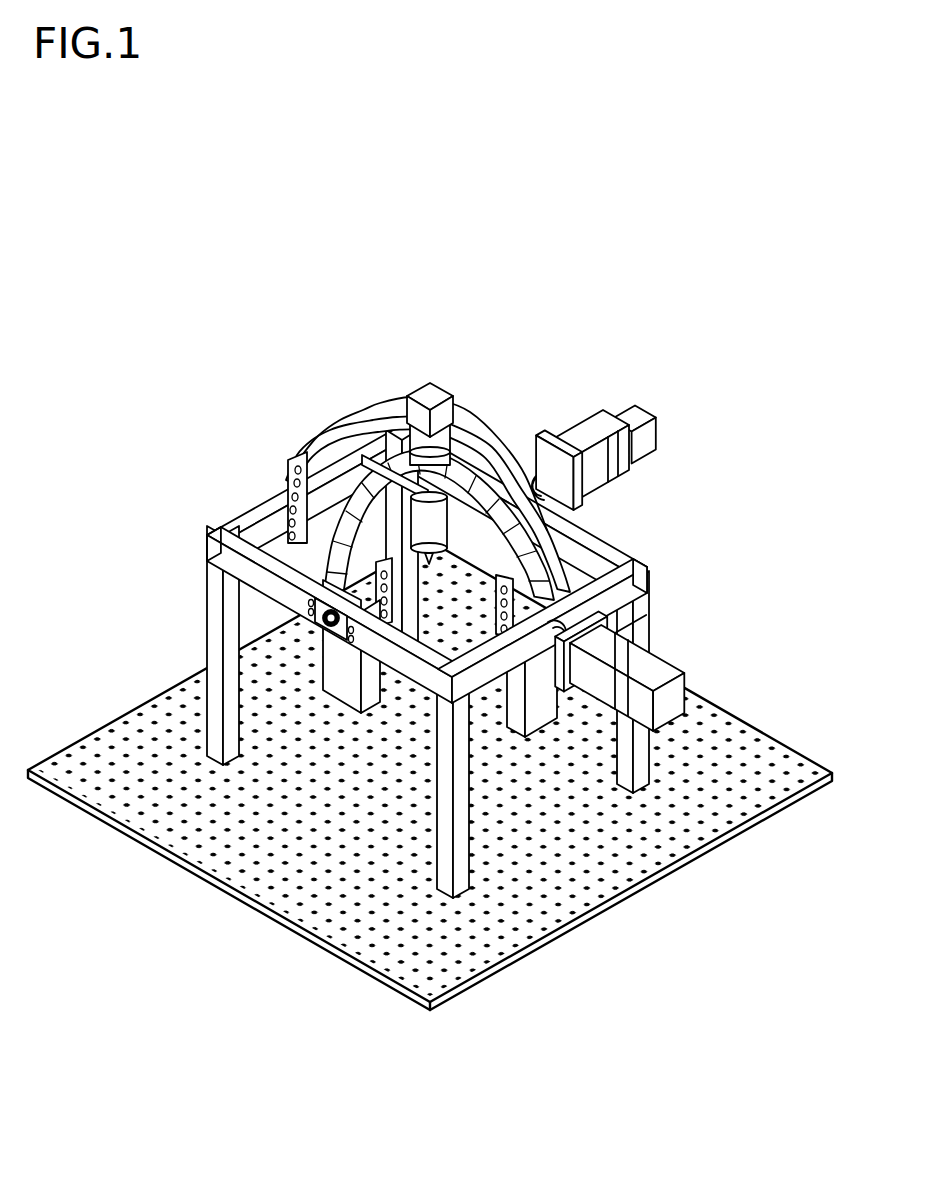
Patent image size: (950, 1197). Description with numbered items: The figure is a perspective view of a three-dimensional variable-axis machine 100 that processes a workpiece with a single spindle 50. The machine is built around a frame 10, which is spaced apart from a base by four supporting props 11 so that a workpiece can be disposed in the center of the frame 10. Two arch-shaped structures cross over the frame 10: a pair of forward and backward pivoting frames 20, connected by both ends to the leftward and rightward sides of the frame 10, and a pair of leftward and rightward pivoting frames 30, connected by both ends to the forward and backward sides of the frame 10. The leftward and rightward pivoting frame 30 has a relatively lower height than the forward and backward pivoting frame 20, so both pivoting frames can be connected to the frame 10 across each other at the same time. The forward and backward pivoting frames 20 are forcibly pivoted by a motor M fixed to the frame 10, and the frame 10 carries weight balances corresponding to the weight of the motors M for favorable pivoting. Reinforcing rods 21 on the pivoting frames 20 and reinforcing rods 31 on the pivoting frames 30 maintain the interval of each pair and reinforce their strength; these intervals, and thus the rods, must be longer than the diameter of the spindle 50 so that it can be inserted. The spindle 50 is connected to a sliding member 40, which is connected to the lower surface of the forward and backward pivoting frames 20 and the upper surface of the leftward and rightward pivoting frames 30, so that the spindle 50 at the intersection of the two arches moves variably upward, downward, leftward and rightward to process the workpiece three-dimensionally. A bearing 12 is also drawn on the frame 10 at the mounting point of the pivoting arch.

The 3D variable-axis machine 100 is at (584, 296).
The frame 10 is at (617, 552).
The supporting props 11 is at (643, 616).
The bearing 12 is at (316, 608).
The forward and backward pivoting frame 20 is at (480, 441).
The reinforcing rods 21 is at (537, 562).
The leftward and rightward pivoting frame 30 is at (350, 512).
The reinforcing rods 31 is at (350, 542).
The sliding member 40 is at (363, 455).
The spindle 50 is at (428, 384).
The motor M is at (636, 429).